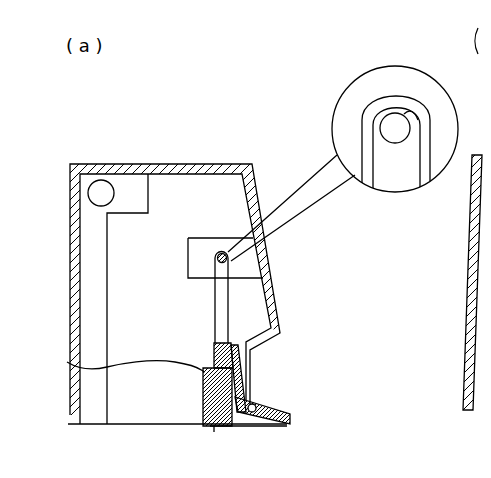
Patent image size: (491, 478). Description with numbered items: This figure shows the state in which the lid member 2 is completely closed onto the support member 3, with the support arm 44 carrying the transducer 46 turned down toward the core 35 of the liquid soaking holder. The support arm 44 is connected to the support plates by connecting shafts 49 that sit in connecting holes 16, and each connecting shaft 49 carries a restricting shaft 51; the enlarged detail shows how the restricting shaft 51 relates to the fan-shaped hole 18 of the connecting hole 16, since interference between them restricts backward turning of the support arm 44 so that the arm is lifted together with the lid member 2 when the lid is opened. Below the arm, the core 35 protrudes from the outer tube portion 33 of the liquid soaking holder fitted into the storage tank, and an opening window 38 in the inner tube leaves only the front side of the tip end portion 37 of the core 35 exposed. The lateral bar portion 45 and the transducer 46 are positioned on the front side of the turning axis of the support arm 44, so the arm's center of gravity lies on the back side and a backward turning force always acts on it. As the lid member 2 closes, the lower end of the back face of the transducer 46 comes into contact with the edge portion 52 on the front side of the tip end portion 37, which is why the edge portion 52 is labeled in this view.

The lid member 2 is at (210, 164).
The support member 3 is at (100, 164).
The connecting hole 16 is at (405, 113).
The fan-shaped hole 18 is at (372, 116).
The outer tube portion 33 is at (228, 425).
The core 35 is at (222, 428).
The tip end portion 37 is at (67, 362).
The opening window 38 is at (207, 388).
The support arm 44 is at (224, 305).
The lateral bar portion 45 is at (236, 353).
The transducer 46 is at (292, 420).
The connecting shaft 49 is at (393, 143).
The restricting shaft 51 is at (367, 187).
The edge portion 52 is at (241, 373).